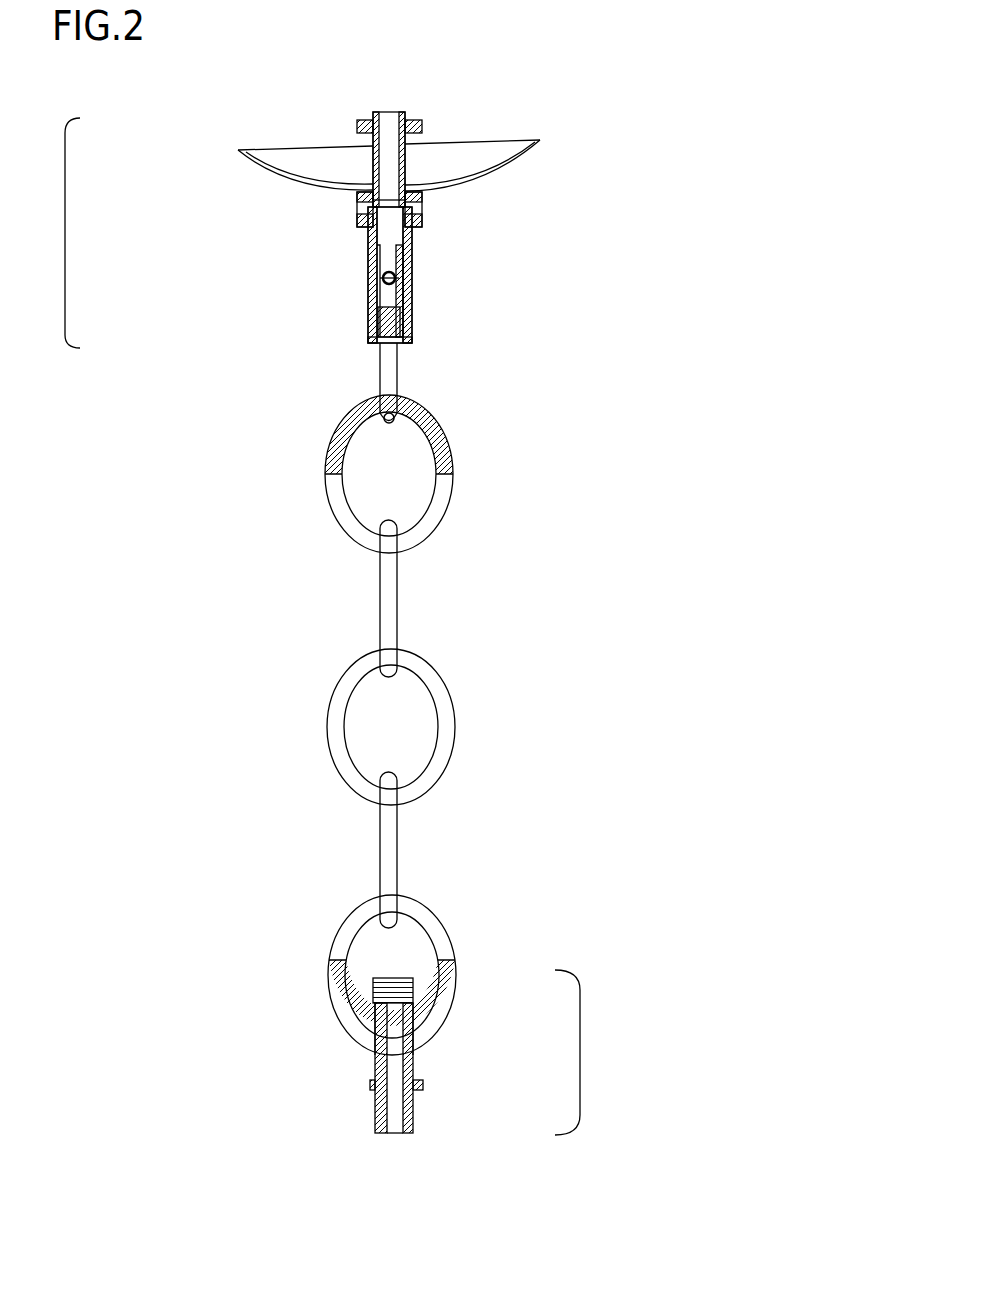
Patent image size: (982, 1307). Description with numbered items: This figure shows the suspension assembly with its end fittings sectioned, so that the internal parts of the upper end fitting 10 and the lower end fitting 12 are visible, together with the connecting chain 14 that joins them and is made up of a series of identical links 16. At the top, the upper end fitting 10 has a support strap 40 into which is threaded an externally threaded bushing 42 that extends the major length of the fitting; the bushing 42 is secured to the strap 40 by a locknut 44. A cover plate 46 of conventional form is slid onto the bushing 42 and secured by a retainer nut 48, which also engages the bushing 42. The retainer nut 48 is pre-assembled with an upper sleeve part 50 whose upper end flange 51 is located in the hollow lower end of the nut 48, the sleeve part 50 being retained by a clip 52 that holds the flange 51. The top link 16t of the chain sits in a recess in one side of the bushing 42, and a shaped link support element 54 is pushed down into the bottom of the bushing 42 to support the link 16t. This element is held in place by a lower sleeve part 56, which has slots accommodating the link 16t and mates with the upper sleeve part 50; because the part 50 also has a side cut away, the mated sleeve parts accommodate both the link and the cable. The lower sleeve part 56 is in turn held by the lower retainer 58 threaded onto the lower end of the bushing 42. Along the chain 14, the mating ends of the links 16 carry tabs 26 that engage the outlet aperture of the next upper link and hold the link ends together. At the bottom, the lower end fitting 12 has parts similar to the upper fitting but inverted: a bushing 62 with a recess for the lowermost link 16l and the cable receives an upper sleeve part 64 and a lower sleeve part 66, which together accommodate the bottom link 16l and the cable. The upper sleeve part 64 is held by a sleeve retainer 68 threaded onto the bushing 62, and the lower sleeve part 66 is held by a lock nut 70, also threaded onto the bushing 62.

The upper end fitting 10 is at (62, 243).
The lower end fitting 12 is at (580, 1045).
The connecting chain 14 is at (490, 645).
The links 16 is at (400, 368).
The top link 16t is at (413, 270).
The lowermost link 16l is at (430, 908).
The tabs 26 is at (413, 288).
The support strap 40 is at (422, 118).
The bushing 42 is at (403, 112).
The locknut 44 is at (422, 128).
The cover plate 46 is at (282, 162).
The retainer nut 48 is at (418, 190).
The upper sleeve part 50 is at (413, 242).
The upper end flange 51 is at (357, 202).
The clip 52 is at (425, 215).
The link support element 54 is at (363, 303).
The lower sleeve part 56 is at (413, 253).
The lower retainer 58 is at (413, 338).
The bushing 62 is at (413, 1000).
The upper sleeve part 64 is at (420, 1027).
The lower sleeve part 66 is at (373, 1062).
The sleeve retainer 68 is at (413, 977).
The lock nut 70 is at (372, 1085).